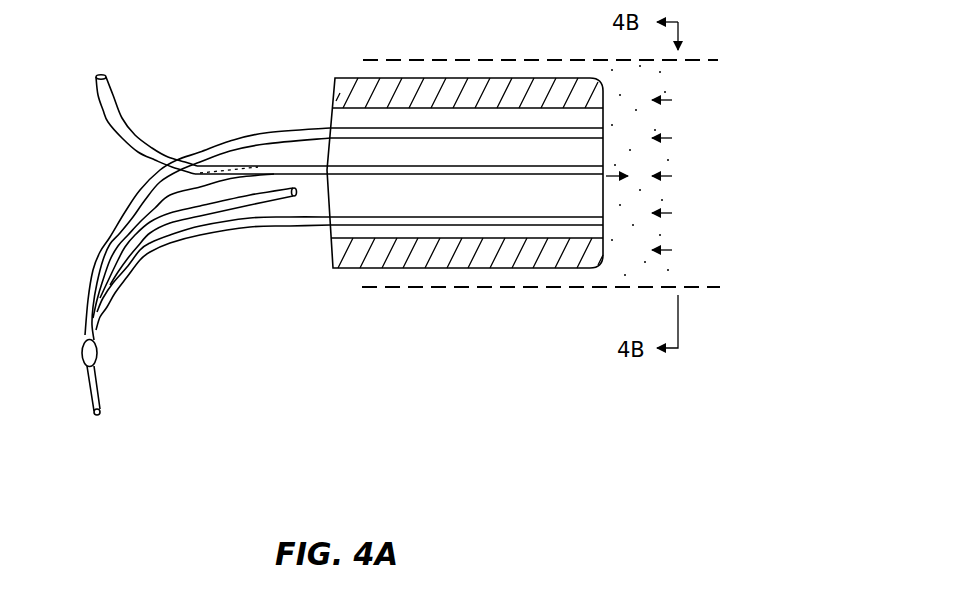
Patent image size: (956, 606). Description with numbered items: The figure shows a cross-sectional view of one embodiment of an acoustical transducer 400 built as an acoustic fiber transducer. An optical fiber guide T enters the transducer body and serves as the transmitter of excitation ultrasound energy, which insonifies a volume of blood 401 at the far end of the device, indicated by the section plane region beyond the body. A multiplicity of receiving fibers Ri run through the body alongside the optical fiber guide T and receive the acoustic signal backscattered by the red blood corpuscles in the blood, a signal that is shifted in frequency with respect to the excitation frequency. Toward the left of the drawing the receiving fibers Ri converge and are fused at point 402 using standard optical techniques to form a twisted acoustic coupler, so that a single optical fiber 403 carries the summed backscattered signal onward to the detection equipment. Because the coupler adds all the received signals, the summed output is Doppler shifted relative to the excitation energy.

The acoustical transducer 400 is at (493, 326).
The volume of blood 401 is at (623, 288).
The fusion point 402 is at (82, 352).
The single optical fiber 403 is at (90, 406).
The optical fiber guide T is at (106, 122).
The receiving fibers Ri is at (277, 278).